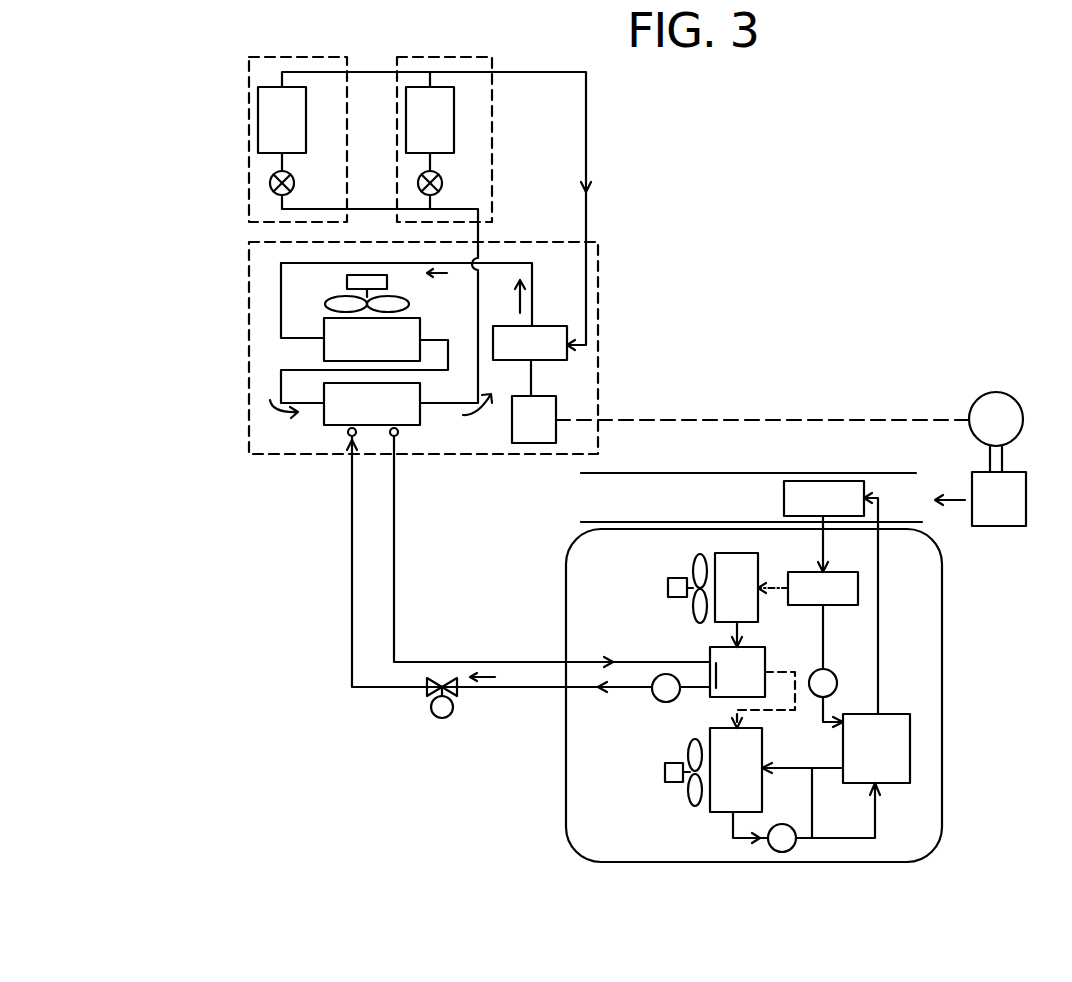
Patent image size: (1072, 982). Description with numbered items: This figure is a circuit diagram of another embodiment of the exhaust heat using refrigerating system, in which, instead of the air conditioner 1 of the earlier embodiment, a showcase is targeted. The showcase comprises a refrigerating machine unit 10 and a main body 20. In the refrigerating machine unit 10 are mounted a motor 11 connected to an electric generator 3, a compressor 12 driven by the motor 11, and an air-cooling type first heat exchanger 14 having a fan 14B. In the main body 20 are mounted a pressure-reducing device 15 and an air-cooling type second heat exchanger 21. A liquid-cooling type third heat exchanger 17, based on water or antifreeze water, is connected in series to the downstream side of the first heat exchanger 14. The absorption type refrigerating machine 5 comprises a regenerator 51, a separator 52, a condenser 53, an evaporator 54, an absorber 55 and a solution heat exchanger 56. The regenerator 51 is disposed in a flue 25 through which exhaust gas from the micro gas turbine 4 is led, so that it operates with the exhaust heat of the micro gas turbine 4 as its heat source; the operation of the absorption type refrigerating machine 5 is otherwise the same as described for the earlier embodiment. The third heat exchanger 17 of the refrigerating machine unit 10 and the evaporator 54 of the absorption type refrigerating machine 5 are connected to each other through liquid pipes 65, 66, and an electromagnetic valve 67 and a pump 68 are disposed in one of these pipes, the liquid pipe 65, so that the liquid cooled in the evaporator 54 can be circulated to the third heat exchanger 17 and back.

The air conditioner 1 is at (165, 118).
The electric generator 3 is at (1018, 402).
The micro gas turbine 4 is at (1026, 505).
The absorption type refrigerating machine 5 is at (942, 832).
The refrigerating machine unit 10 is at (249, 322).
The motor 11 is at (556, 396).
The compressor 12 is at (560, 326).
The first heat exchanger 14 is at (324, 355).
The fan 14B is at (347, 282).
The pressure-reducing device 15 is at (270, 183).
The third heat exchanger 17 is at (324, 418).
The main body 20 is at (249, 136).
The second heat exchanger 21 is at (258, 92).
The flue 25 is at (660, 472).
The regenerator 51 is at (826, 481).
The separator 52 is at (848, 605).
The condenser 53 is at (748, 553).
The evaporator 54 is at (762, 650).
The absorber 55 is at (762, 750).
The solution heat exchanger 56 is at (900, 714).
The liquid pipe 65 is at (352, 650).
The liquid pipe 66 is at (394, 600).
The electromagnetic valve 67 is at (453, 720).
The pump 68 is at (665, 702).